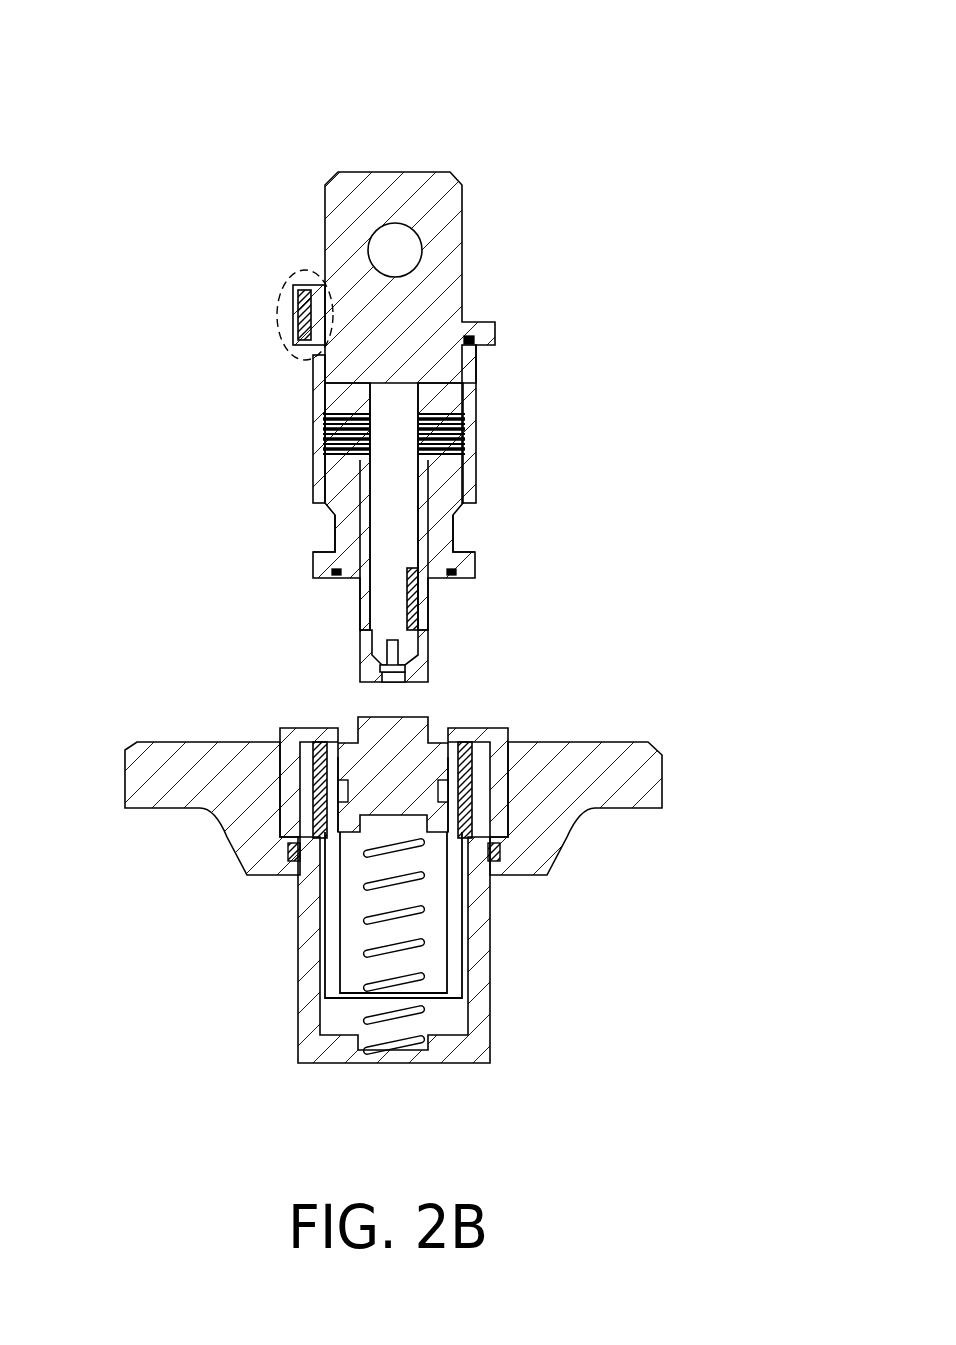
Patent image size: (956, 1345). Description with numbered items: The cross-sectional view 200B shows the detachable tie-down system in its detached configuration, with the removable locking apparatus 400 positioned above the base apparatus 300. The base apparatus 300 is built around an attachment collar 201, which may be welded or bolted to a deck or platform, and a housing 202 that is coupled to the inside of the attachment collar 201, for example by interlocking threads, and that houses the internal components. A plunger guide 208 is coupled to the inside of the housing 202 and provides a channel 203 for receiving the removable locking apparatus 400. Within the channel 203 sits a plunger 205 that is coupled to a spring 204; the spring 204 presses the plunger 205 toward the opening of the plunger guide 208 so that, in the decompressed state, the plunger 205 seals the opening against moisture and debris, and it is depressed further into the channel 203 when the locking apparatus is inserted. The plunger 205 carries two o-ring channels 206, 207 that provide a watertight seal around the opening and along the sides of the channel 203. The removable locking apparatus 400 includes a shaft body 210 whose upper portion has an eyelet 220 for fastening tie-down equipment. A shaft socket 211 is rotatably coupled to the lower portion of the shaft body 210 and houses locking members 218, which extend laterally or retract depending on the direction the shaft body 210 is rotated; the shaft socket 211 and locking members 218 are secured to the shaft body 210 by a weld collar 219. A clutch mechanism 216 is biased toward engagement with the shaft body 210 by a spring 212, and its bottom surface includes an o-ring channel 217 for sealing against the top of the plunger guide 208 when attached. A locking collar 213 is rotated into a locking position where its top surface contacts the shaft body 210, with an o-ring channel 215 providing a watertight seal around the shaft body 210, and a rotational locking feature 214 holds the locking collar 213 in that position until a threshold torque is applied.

The cross-sectional view 200B is at (482, 62).
The removable locking apparatus 400 is at (95, 160).
The base apparatus 300 is at (95, 722).
The shaft body 210 is at (324, 228).
The eyelet 220 is at (407, 244).
The rotational locking feature 214 is at (279, 296).
The channel 215 is at (476, 345).
The spring 212 is at (367, 392).
The locking collar 213 is at (313, 456).
The clutch mechanism 216 is at (335, 522).
The shaft socket 211 is at (422, 541).
The channel 217 is at (336, 581).
The locking members 218 is at (418, 599).
The weld collar 219 is at (363, 641).
The plunger 205 is at (418, 718).
The channel 206 is at (340, 822).
The plunger guide 208 is at (490, 728).
The attachment collar 201 is at (620, 742).
The channel 207 is at (340, 846).
The housing 202 is at (480, 958).
The spring 204 is at (375, 1014).
The channel 203 is at (434, 975).